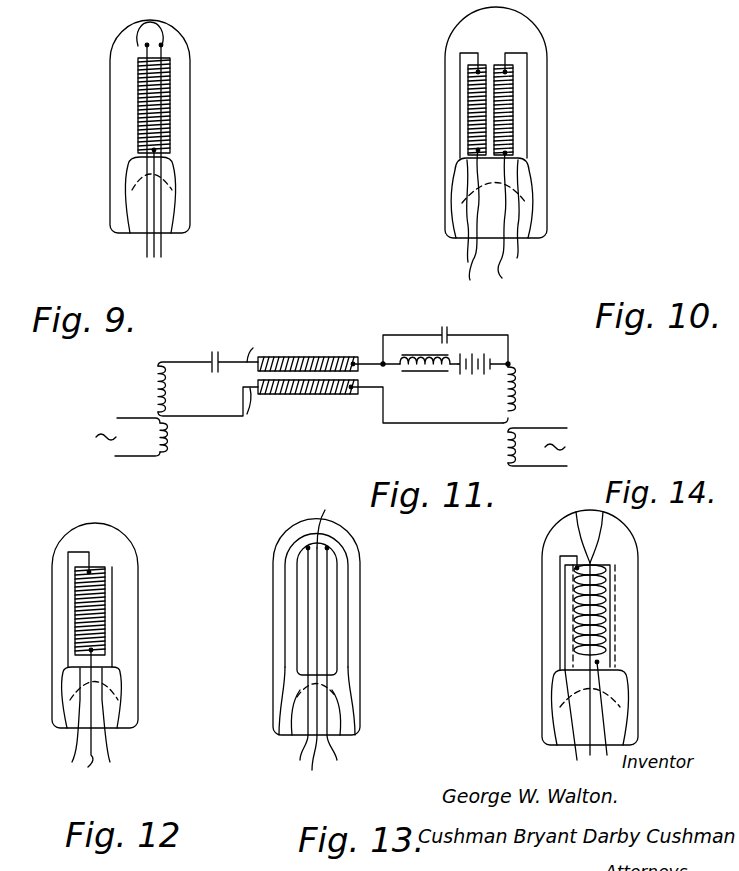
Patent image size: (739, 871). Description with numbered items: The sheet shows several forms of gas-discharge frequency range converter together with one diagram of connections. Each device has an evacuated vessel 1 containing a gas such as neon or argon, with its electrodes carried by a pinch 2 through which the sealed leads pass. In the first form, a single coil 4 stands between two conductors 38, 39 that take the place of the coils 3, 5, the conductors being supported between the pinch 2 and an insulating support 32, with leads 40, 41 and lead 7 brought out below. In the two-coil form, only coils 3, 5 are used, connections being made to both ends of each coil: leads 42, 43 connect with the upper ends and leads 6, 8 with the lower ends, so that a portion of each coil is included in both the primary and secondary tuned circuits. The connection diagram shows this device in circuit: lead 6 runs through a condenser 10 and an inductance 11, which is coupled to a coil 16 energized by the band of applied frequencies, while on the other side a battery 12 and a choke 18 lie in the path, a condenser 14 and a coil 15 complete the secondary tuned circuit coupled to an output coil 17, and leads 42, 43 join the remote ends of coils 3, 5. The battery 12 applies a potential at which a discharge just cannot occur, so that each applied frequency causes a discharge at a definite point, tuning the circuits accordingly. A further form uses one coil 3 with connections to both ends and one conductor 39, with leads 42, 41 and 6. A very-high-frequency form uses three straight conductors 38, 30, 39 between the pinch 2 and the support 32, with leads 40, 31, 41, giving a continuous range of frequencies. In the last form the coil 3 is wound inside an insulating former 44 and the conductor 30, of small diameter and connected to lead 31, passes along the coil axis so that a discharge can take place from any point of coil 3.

In FIG. 9, the evacuated vessel 1 is at (191, 107).
In FIG. 10, the evacuated vessel 1 is at (548, 63).
In FIG. 12, the evacuated vessel 1 is at (122, 525).
In FIG. 13, the evacuated vessel 1 is at (359, 545).
In FIG. 14, the evacuated vessel 1 is at (639, 578).
In FIG. 9, the pinch 2 is at (171, 166).
In FIG. 10, the pinch 2 is at (531, 173).
In FIG. 12, the pinch 2 is at (115, 673).
In FIG. 13, the pinch 2 is at (341, 683).
In FIG. 14, the pinch 2 is at (619, 684).
In FIG. 10, the coil 3 is at (467, 108).
In FIG. 11, the coil 3 is at (292, 356).
In FIG. 12, the coil 3 is at (101, 567).
In FIG. 14, the coil 3 is at (601, 589).
In FIG. 9, the coil 4 is at (171, 63).
In FIG. 10, the coil 5 is at (514, 108).
In FIG. 11, the coil 5 is at (293, 395).
In FIG. 10, the lead 6 is at (469, 221).
In FIG. 11, the lead 6 is at (254, 346).
In FIG. 12, the lead 6 is at (89, 717).
In FIG. 14, the lead 6 is at (590, 713).
In FIG. 9, the lead 7 is at (155, 259).
In FIG. 10, the lead 8 is at (504, 219).
In FIG. 11, the lead 8 is at (245, 412).
In FIG. 11, the condenser 10 is at (211, 357).
In FIG. 11, the inductance 11 is at (155, 392).
In FIG. 11, the battery 12 is at (472, 375).
In FIG. 11, the condenser 14 is at (450, 332).
In FIG. 11, the coil 15 is at (519, 391).
In FIG. 11, the coil 16 is at (167, 441).
In FIG. 11, the primary coil 17 is at (503, 453).
In FIG. 11, the choke 18 is at (426, 372).
In FIG. 13, the conductor 30 is at (312, 524).
In FIG. 14, the conductor 30 is at (592, 563).
In FIG. 13, the lead 31 is at (310, 668).
In FIG. 14, the lead 31 is at (605, 718).
In FIG. 9, the insulating support 32 is at (145, 32).
In FIG. 13, the insulating support 32 is at (343, 583).
In FIG. 14, the insulating support 32 is at (590, 534).
In FIG. 9, the conductor 38 is at (146, 46).
In FIG. 13, the conductor 38 is at (307, 612).
In FIG. 9, the conductor 39 is at (162, 45).
In FIG. 12, the conductor 39 is at (113, 603).
In FIG. 13, the conductor 39 is at (328, 611).
In FIG. 9, the lead 40 is at (146, 254).
In FIG. 13, the lead 40 is at (302, 748).
In FIG. 9, the lead 41 is at (163, 252).
In FIG. 12, the lead 41 is at (105, 745).
In FIG. 13, the lead 41 is at (336, 750).
In FIG. 10, the lead 42 is at (466, 251).
In FIG. 11, the lead 42 is at (370, 363).
In FIG. 12, the lead 42 is at (77, 745).
In FIG. 14, the lead 42 is at (576, 755).
In FIG. 10, the lead 43 is at (520, 250).
In FIG. 11, the lead 43 is at (375, 388).
In FIG. 14, the insulating former 44 is at (616, 620).